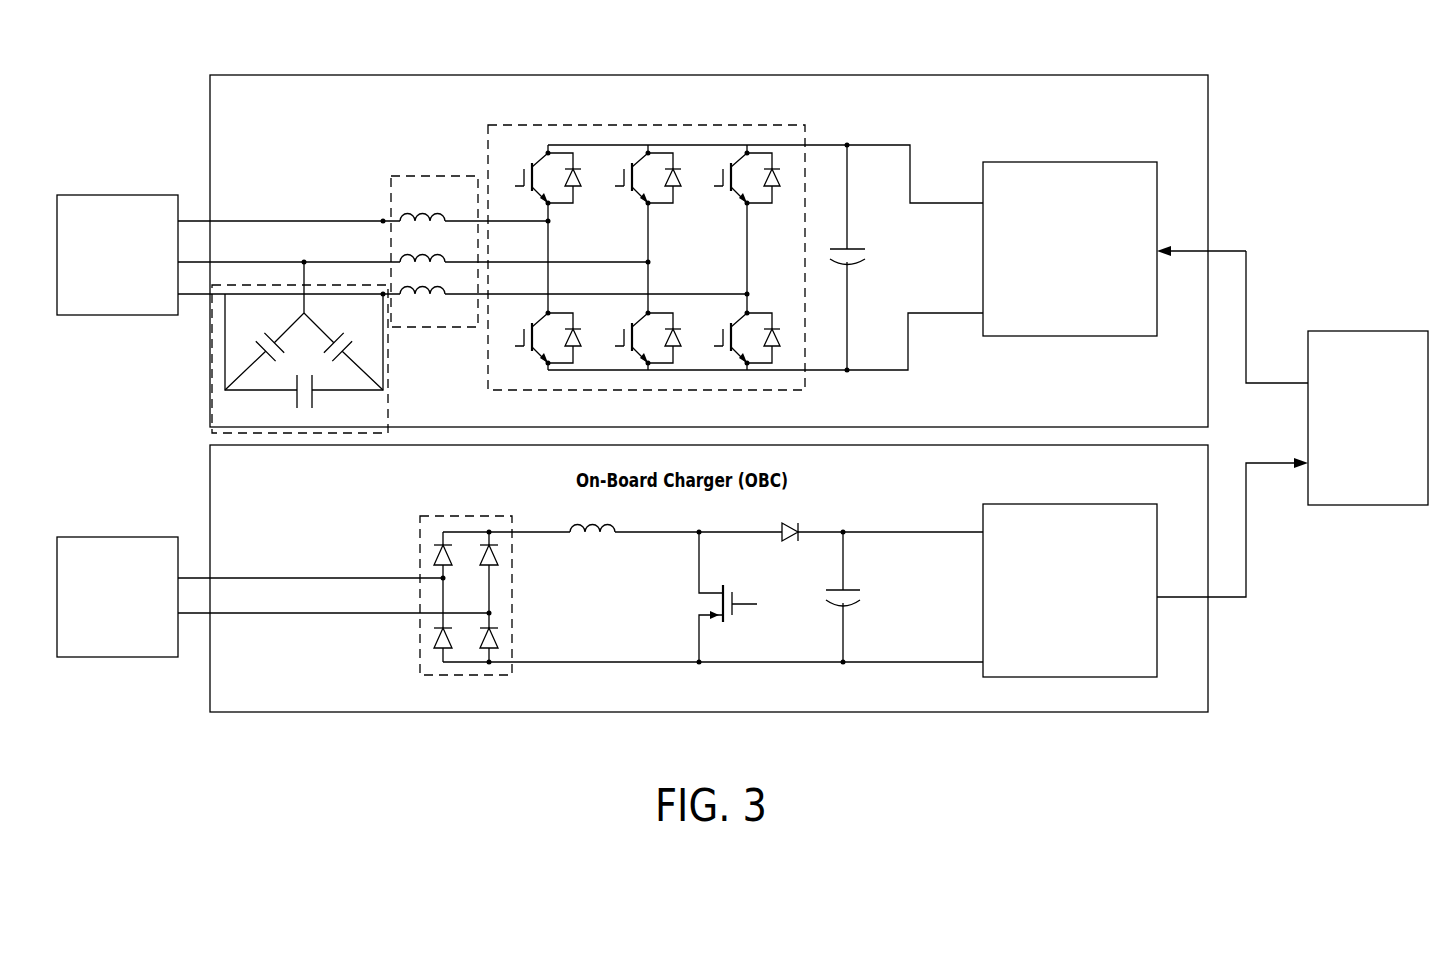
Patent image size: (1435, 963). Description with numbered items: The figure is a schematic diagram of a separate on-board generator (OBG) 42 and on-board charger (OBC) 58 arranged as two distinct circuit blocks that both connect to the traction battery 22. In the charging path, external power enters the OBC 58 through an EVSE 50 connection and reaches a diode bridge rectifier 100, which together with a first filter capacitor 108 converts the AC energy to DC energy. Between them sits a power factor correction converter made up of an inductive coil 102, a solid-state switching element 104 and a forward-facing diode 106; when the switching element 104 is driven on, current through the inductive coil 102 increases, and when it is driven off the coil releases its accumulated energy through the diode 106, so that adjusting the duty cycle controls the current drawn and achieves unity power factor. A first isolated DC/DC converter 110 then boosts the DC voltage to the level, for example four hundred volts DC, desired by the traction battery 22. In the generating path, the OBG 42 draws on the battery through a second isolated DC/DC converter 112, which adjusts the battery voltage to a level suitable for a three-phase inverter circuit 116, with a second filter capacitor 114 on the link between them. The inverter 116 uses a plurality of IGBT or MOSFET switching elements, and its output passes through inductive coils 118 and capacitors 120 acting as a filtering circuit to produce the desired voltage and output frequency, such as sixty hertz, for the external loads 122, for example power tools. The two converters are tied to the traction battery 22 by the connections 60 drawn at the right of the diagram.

The traction battery 22 is at (1363, 331).
The on-board generator (OBG) 42 is at (1152, 75).
The EVSE 50 is at (80, 537).
The on-board charger (OBC) 58 is at (1122, 712).
The DC bus connection to battery 60 is at (1240, 250).
The diode bridge rectifier 100 is at (440, 516).
The inductive coil 102 is at (616, 531).
The solid-state switching element 104 is at (736, 610).
The forward-facing diode 106 is at (801, 530).
The first filter capacitor 108 is at (846, 586).
The first DC/DC converter 110 is at (1054, 504).
The second isolated DC/DC converter 112 is at (1063, 162).
The second filter capacitor 114 is at (864, 238).
The three-phase inverter circuit 116 is at (810, 140).
The inductive coils 118 is at (403, 176).
The capacitors 120 is at (390, 410).
The external loads 122 is at (83, 195).